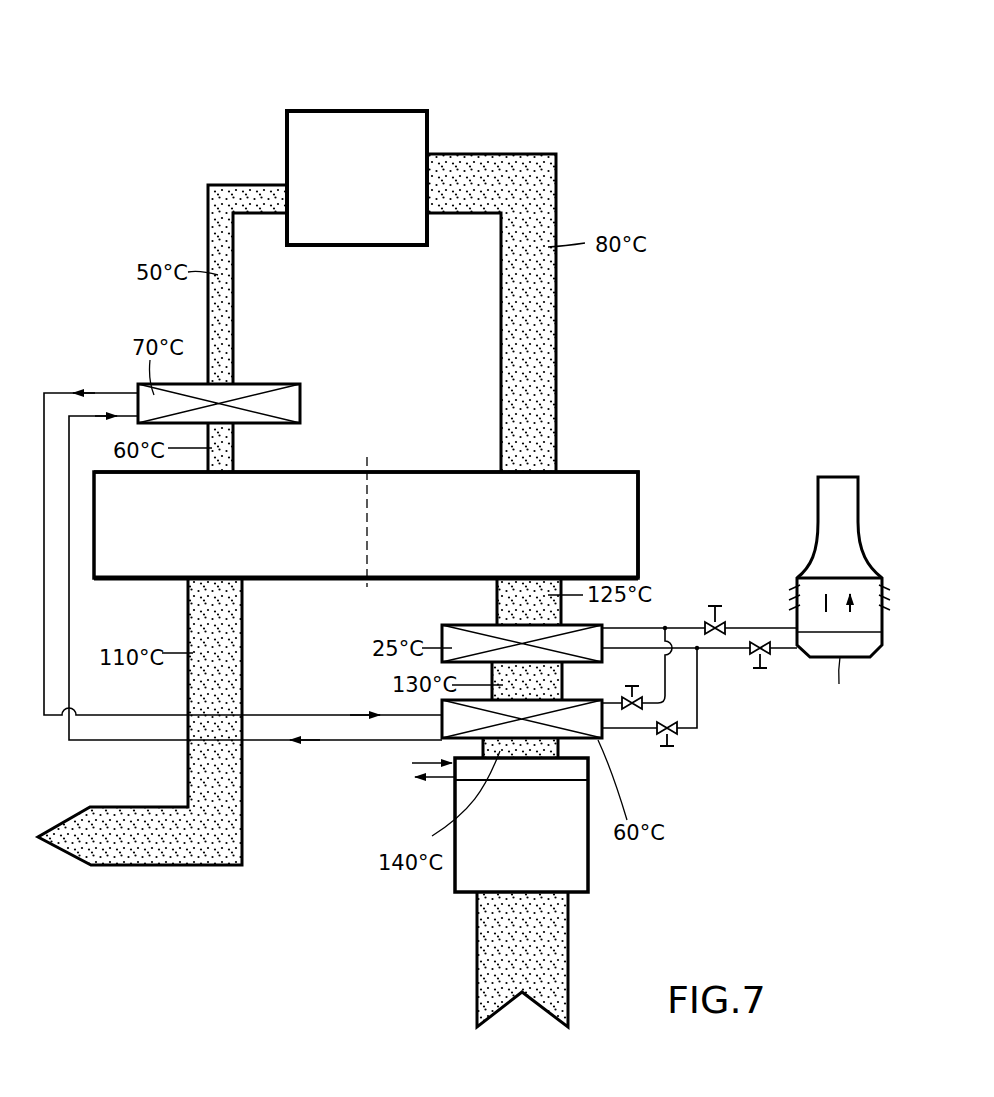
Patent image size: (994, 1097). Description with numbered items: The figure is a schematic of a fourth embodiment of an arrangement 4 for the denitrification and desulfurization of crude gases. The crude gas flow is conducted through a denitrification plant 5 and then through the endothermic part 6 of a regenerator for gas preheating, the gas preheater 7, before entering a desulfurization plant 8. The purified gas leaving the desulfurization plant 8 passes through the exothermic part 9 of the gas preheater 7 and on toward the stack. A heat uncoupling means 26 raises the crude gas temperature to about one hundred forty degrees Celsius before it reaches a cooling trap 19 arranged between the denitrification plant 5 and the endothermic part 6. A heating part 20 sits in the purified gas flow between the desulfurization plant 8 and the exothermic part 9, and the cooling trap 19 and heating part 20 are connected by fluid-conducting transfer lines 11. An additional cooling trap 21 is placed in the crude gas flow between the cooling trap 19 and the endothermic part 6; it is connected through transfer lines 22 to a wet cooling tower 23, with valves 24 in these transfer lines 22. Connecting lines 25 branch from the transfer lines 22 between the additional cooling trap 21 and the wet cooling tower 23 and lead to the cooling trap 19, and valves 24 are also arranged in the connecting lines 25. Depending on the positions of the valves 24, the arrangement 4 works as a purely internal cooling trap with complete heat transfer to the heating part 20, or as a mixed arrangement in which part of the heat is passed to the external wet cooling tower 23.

The arrangement 4 is at (502, 112).
The denitrification plant 5 is at (532, 848).
The endothermic part 6 is at (628, 481).
The gas preheater 7 is at (406, 538).
The desulfurization plant 8 is at (362, 183).
The exothermic part 9 is at (121, 565).
The transfer lines 11 is at (321, 742).
The cooling trap 19 is at (440, 739).
The heating part 20 is at (263, 378).
The additional cooling trap 21 is at (441, 628).
The transfer lines 22 is at (718, 652).
The wet cooling tower 23 is at (811, 503).
The valves 24 is at (724, 624).
The connecting lines 25 is at (668, 700).
The heat uncoupling means 26 is at (560, 772).